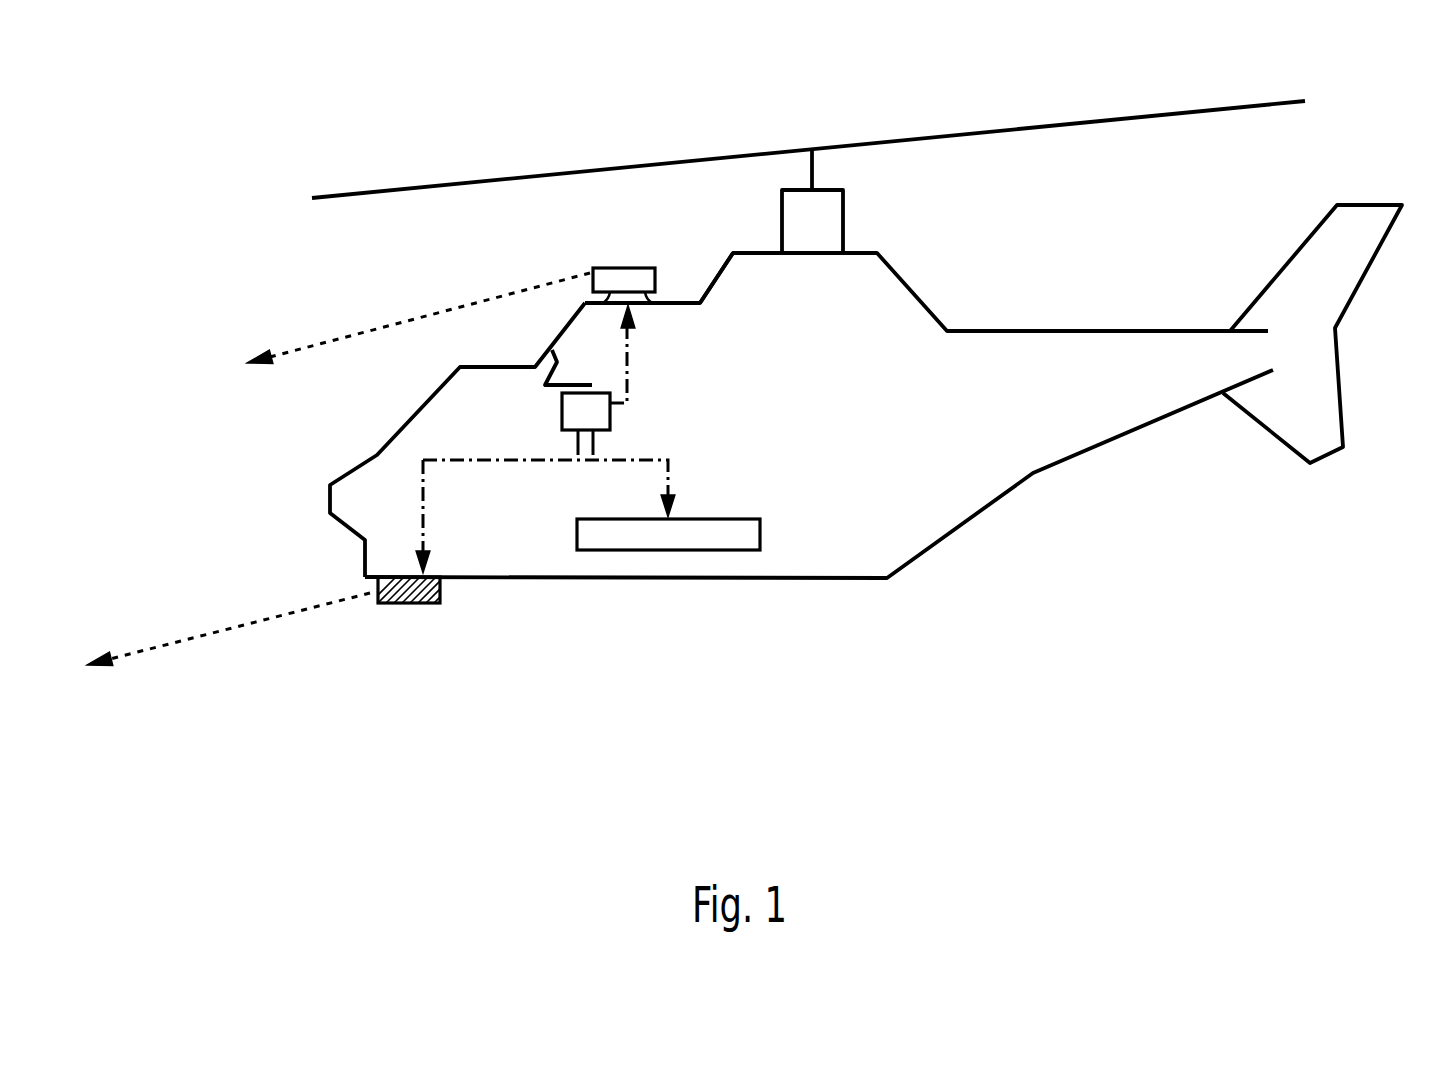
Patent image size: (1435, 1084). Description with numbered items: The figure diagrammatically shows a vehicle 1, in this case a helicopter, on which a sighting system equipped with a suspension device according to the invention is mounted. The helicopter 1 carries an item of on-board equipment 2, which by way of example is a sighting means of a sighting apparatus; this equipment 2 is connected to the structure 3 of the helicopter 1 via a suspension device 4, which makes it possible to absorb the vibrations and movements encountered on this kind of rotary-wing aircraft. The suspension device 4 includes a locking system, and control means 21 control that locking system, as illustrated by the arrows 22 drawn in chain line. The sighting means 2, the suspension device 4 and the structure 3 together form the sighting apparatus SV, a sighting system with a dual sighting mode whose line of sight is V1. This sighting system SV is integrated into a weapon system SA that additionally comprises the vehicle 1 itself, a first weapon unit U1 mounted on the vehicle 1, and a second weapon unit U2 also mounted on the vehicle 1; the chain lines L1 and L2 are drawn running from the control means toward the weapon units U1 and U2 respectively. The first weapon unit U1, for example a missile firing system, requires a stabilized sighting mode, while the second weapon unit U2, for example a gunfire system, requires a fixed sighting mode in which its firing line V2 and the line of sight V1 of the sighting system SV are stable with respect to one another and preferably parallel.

The vehicle 1 is at (722, 578).
The item of on-board equipment 2 is at (637, 267).
The structure 3 is at (717, 273).
The suspension device 4 is at (680, 300).
The control means 21 is at (610, 423).
The arrows 22 is at (628, 367).
The sighting apparatus SV is at (566, 240).
The weapon system SA is at (346, 416).
The line of sight V1 is at (358, 335).
The firing line V2 is at (213, 632).
The first signal line L1 is at (618, 465).
The second signal line L2 is at (427, 510).
The first weapon unit U1 is at (758, 533).
The second weapon unit U2 is at (415, 595).